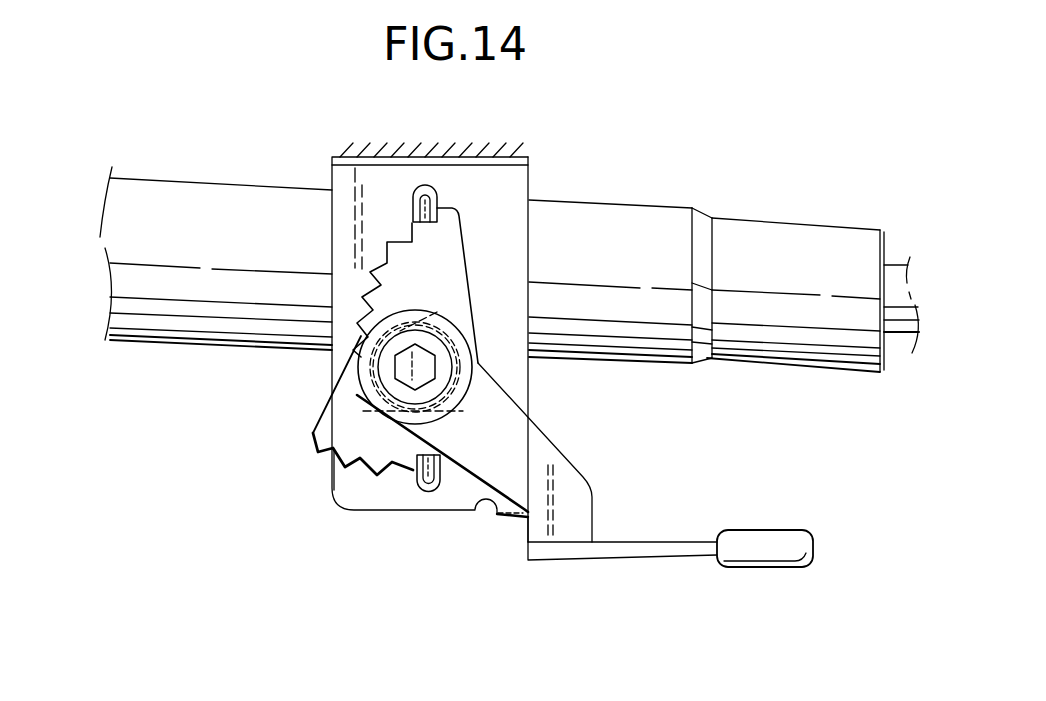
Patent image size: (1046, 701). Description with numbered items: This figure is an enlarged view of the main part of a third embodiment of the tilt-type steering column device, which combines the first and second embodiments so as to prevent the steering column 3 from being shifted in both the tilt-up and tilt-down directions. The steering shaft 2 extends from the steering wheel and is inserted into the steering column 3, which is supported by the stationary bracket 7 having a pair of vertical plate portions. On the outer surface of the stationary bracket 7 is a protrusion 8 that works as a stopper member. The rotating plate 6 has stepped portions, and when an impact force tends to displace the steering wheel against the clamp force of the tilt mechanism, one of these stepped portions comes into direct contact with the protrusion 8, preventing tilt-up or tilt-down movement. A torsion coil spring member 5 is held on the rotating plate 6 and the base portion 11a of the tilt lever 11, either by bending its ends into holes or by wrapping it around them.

The steering shaft 2 is at (896, 262).
The steering column 3 is at (668, 225).
The torsion coil spring member 5 is at (432, 311).
The rotating plate 6 is at (381, 287).
The stationary bracket 7 is at (520, 183).
The protrusion 8 is at (437, 200).
The tilt lever 11 is at (665, 588).
The base portion 11a is at (566, 470).